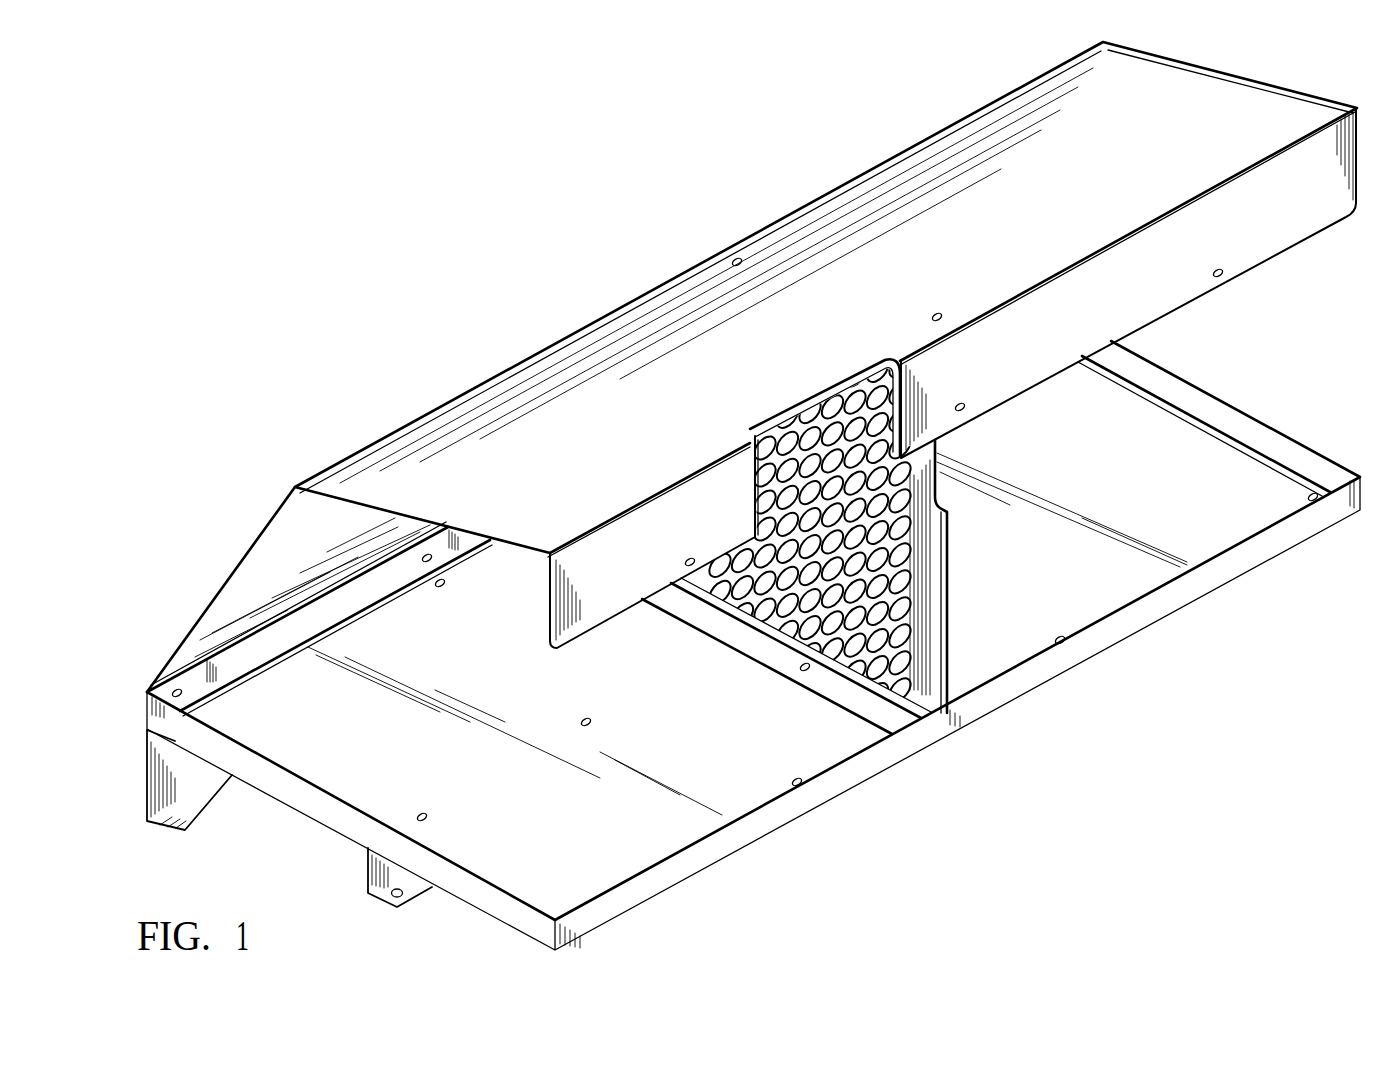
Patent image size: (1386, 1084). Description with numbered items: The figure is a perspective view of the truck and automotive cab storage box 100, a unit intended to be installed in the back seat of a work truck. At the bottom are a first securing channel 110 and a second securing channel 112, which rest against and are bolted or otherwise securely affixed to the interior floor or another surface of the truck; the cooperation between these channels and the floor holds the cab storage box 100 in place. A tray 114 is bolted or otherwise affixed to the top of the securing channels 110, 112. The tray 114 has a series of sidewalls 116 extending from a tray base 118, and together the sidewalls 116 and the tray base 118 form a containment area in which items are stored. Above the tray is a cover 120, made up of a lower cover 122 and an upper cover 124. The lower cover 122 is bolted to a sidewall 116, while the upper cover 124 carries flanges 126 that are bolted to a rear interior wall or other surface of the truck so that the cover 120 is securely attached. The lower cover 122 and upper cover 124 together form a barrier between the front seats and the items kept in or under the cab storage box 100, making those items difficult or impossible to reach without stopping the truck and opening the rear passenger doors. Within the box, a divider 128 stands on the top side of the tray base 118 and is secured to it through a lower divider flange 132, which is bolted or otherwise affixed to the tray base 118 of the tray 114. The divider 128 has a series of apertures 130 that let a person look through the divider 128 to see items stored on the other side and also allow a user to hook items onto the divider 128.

The truck and automotive cab storage box 100 is at (296, 260).
The first securing channel 110 is at (202, 810).
The second securing channel 112 is at (383, 902).
The tray 114 is at (610, 893).
The sidewalls 116 is at (197, 687).
The tray base 118 is at (357, 782).
The cover 120 is at (580, 373).
The lower cover 122 is at (243, 553).
The upper cover 124 is at (403, 448).
The flanges 126 is at (610, 600).
The divider 128 is at (873, 531).
The apertures 130 is at (902, 642).
The lower divider flange 132 is at (837, 685).